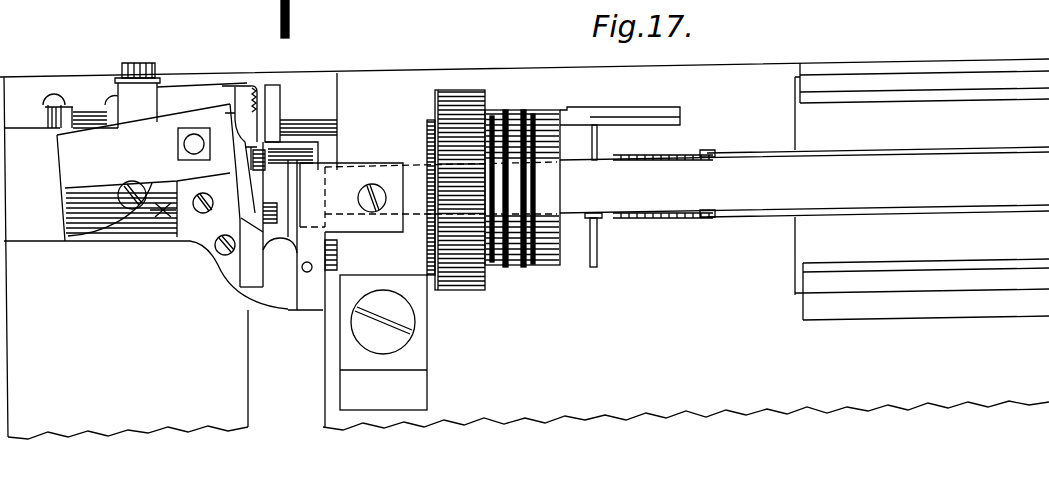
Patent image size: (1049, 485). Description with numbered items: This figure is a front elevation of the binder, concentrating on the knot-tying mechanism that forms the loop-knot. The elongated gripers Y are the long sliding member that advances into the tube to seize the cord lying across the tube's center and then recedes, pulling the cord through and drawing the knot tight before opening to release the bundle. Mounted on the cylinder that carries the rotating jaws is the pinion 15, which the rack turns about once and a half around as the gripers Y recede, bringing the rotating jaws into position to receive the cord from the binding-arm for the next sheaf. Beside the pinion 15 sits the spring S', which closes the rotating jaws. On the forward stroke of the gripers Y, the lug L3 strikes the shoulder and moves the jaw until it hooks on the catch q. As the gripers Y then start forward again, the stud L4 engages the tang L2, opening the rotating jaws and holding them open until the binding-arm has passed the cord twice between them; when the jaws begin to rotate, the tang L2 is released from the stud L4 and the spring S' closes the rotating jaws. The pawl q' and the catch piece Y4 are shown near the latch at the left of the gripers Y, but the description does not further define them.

The pinion 15 is at (460, 198).
The spring S' is at (522, 188).
The elongated gripers Y is at (291, 284).
The catch Y4 is at (251, 272).
The catch q is at (646, 120).
The pawl q' is at (251, 100).
The tang L2 is at (620, 102).
The lug L3 is at (606, 142).
The lug or stud L4 is at (603, 240).